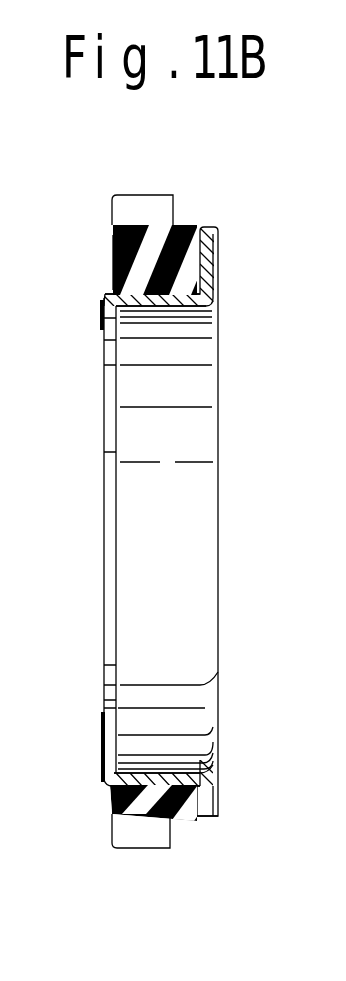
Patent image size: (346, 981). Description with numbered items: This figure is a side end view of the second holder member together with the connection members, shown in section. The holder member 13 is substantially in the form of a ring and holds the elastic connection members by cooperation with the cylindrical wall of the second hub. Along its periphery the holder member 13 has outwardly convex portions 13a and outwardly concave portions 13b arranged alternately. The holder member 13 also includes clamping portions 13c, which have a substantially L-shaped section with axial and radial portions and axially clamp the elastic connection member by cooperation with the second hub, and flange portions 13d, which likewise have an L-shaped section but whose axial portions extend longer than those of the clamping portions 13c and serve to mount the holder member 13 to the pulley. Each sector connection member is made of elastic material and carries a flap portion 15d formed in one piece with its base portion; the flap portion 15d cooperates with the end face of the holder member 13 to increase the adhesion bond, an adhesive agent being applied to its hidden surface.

The holder member 13 is at (250, 488).
The outwardly convex portion 13a is at (158, 775).
The outwardly concave portion 13b is at (165, 298).
The clamping portion 13c is at (203, 819).
The flange portion 13d is at (218, 270).
The flap portion 15d is at (93, 299).